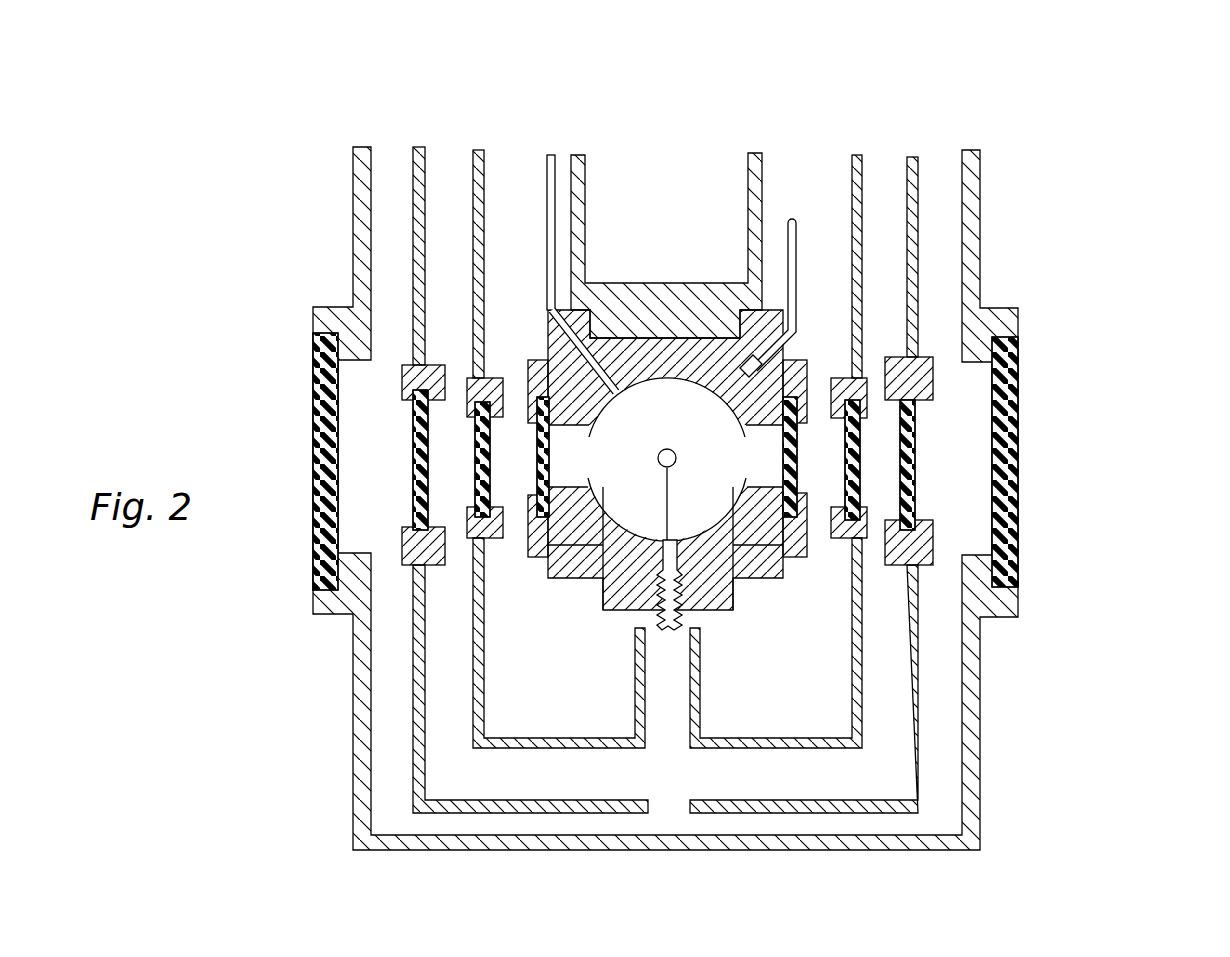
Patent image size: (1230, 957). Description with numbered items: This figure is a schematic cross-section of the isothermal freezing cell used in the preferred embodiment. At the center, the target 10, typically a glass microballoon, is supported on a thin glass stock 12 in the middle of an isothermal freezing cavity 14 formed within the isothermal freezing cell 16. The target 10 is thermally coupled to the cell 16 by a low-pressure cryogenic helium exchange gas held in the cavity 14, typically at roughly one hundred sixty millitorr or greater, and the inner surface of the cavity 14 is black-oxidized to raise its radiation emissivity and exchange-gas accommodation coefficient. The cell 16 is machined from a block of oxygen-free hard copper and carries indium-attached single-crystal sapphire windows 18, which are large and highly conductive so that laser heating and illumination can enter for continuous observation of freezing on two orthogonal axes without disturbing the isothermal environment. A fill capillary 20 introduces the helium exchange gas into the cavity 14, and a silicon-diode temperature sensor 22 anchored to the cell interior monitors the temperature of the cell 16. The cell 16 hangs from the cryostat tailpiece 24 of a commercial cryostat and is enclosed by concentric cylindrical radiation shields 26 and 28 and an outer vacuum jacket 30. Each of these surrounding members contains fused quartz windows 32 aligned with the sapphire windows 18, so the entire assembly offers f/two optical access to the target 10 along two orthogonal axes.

The target 10 is at (676, 459).
The thin glass stock 12 is at (668, 480).
The isothermal freezing cavity 14 is at (607, 515).
The isothermal freezing cell 16 is at (547, 316).
The sapphire window 18 is at (802, 462).
The fill capillary 20 is at (546, 182).
The silicon-diode temperature sensor 22 is at (796, 222).
The cryostat tailpiece 24 is at (748, 241).
The radiation shield 26 is at (854, 156).
The radiation shield 28 is at (910, 158).
The vacuum jacket 30 is at (980, 185).
The fused quartz windows 32 is at (857, 443).